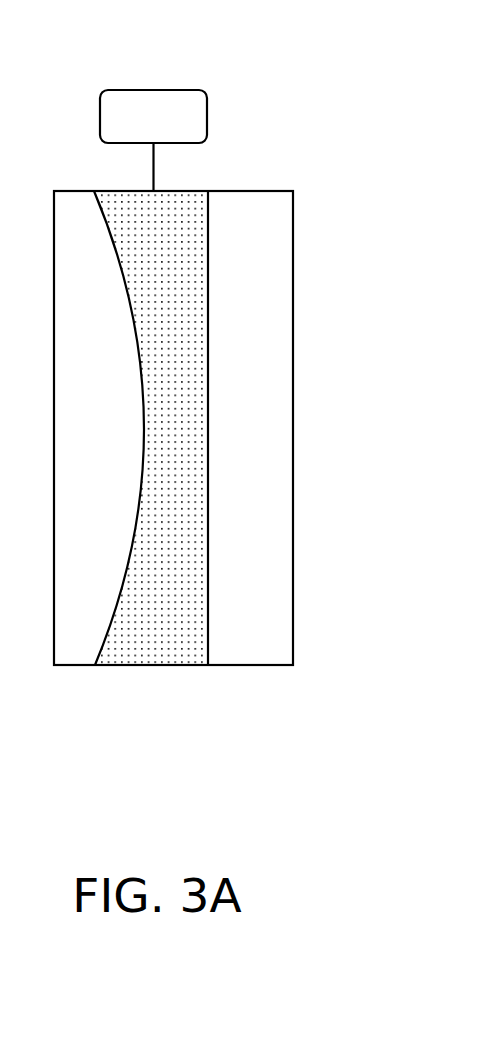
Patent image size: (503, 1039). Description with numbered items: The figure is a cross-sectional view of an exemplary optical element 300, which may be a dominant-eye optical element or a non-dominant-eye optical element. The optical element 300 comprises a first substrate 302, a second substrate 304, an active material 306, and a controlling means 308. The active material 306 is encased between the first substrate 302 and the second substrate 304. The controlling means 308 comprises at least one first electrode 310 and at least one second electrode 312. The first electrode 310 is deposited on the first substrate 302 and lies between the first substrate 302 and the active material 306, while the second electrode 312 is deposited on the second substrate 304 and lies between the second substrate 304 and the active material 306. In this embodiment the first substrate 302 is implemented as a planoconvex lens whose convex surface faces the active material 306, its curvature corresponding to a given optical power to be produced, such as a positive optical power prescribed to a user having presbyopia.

The optical element 300 is at (305, 81).
The first substrate 302 is at (77, 650).
The second substrate 304 is at (260, 648).
The active material 306 is at (175, 627).
The controlling means 308 is at (153, 140).
The first electrode 310 is at (143, 432).
The second electrode 312 is at (208, 320).